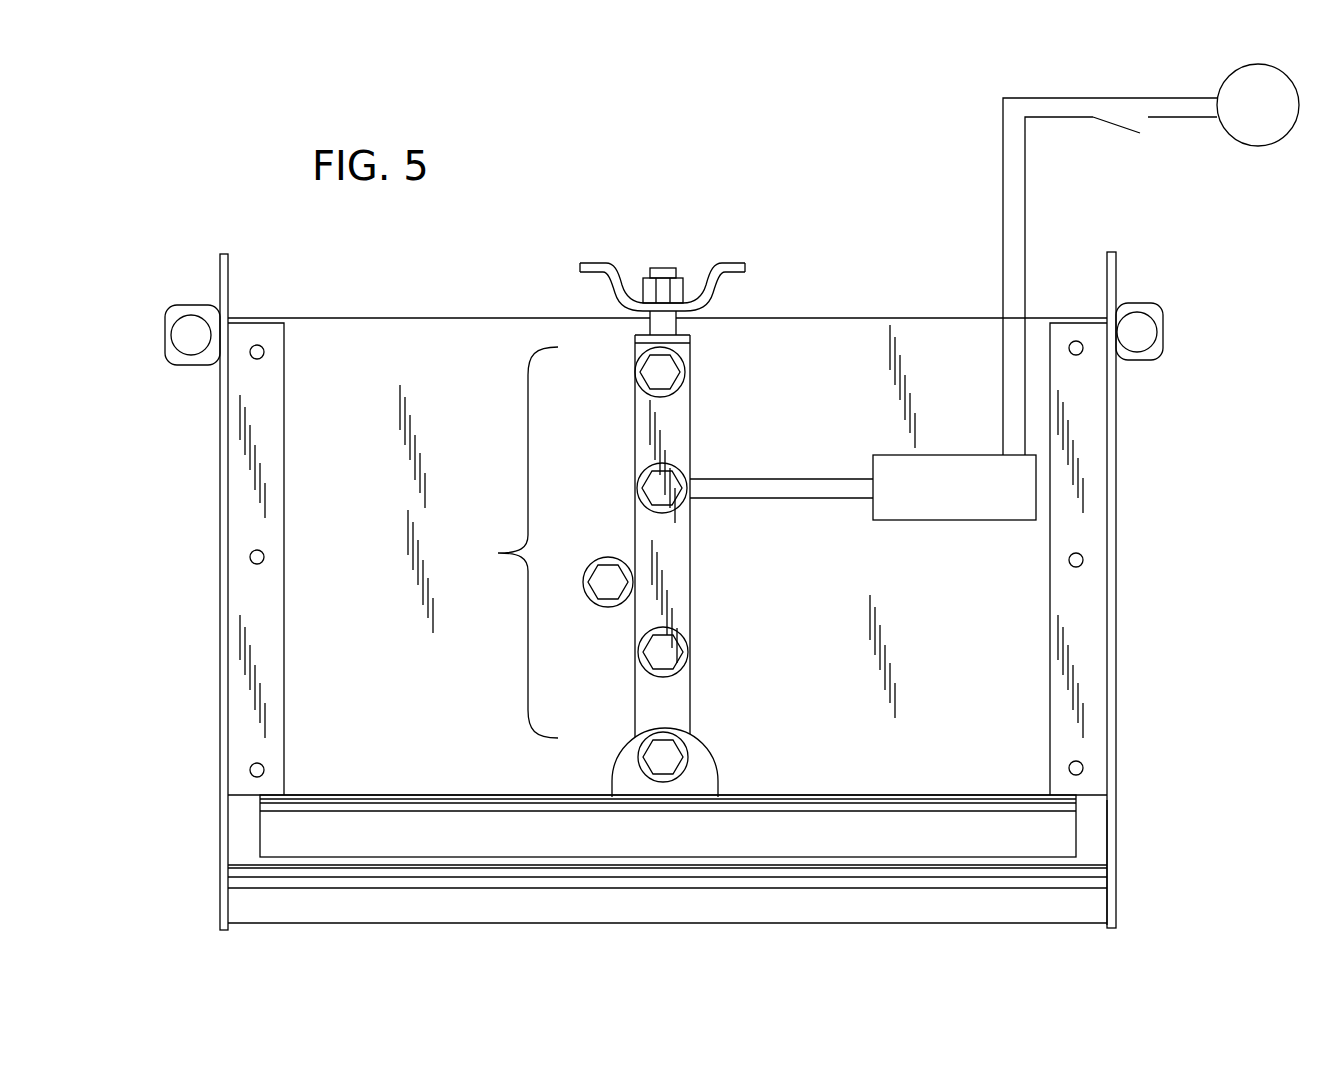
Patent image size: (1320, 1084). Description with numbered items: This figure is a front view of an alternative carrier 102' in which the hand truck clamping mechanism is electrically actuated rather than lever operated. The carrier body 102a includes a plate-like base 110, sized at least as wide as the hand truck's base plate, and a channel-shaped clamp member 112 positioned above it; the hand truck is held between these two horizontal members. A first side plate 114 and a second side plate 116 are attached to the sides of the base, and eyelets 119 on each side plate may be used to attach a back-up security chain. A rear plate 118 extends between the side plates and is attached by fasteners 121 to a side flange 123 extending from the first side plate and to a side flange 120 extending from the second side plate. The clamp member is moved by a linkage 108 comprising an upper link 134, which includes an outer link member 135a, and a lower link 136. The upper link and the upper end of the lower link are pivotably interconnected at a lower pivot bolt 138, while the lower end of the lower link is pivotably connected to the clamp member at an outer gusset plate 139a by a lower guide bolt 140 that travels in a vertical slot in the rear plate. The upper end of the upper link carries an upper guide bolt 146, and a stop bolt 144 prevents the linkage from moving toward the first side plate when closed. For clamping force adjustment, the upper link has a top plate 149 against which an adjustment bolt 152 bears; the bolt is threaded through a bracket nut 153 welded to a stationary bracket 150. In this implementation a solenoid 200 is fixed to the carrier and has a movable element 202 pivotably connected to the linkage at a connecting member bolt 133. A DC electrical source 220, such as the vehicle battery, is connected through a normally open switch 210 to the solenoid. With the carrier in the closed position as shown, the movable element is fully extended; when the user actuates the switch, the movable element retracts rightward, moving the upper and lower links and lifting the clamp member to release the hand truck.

The carrier 102' is at (1181, 217).
The carrier body 102a is at (1116, 808).
The linkage 108 is at (500, 542).
The base 110 is at (525, 918).
The clamp member 112 is at (446, 810).
The first side plate 114 is at (220, 488).
The second side plate 116 is at (1116, 462).
The rear plate 118 is at (466, 330).
The eyelet 119 is at (180, 306).
The side flange 120 is at (1050, 650).
The fastener 121 is at (264, 352).
The side flange 123 is at (272, 448).
The connecting member bolt 133 is at (648, 493).
The upper link 134 is at (646, 430).
The outer link member 135a is at (690, 590).
The lower link 136 is at (675, 695).
The lower pivot bolt 138 is at (680, 660).
The outer gusset plate 139a is at (718, 790).
The lower guide bolt 140 is at (683, 765).
The stop bolt 144 is at (596, 590).
The upper guide bolt 146 is at (685, 392).
The top plate 149 is at (690, 340).
The bracket 150 is at (740, 266).
The adjustment bolt 152 is at (665, 268).
The bracket nut 153 is at (640, 290).
The solenoid 200 is at (928, 522).
The movable element 202 is at (780, 500).
The switch 210 is at (1108, 122).
The DC electrical source 220 is at (1278, 147).